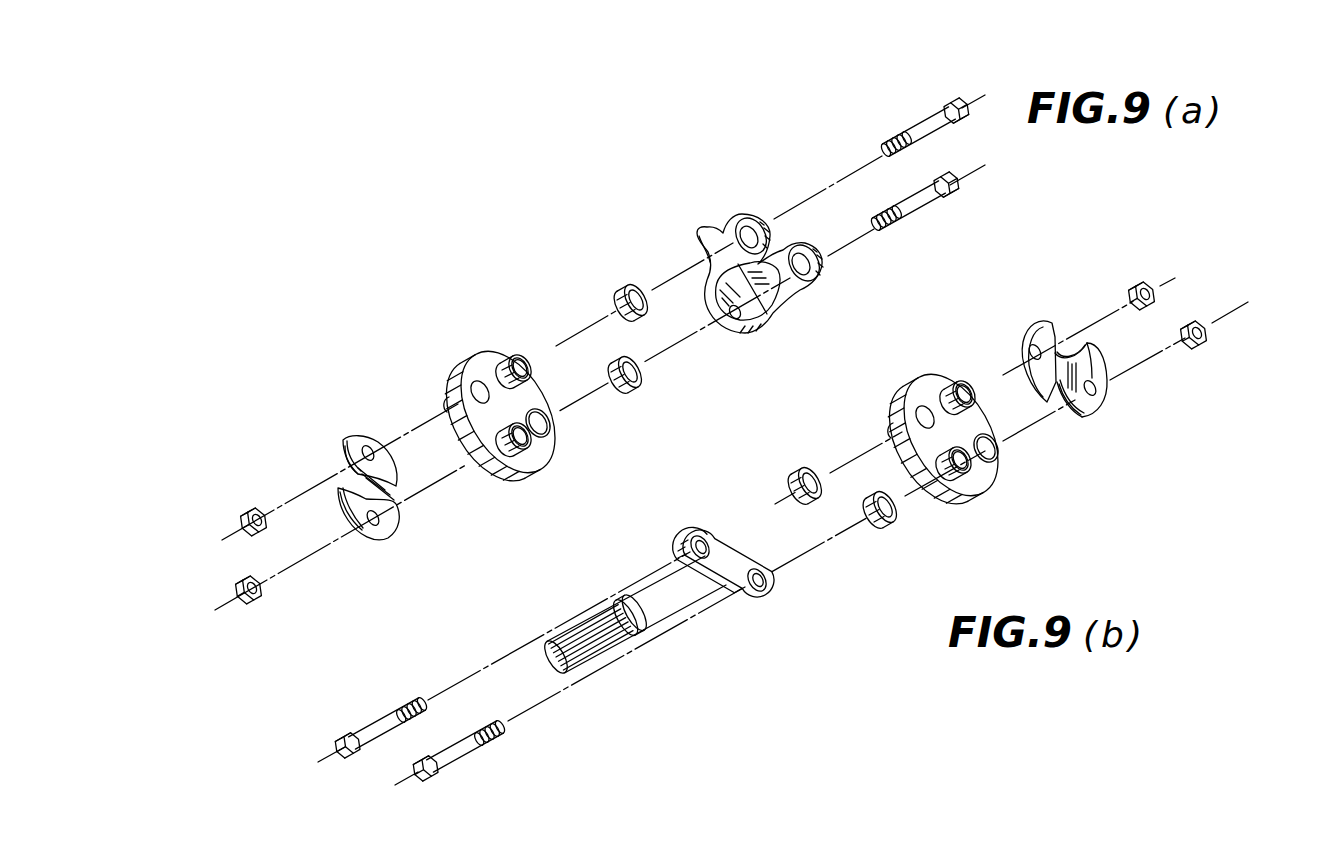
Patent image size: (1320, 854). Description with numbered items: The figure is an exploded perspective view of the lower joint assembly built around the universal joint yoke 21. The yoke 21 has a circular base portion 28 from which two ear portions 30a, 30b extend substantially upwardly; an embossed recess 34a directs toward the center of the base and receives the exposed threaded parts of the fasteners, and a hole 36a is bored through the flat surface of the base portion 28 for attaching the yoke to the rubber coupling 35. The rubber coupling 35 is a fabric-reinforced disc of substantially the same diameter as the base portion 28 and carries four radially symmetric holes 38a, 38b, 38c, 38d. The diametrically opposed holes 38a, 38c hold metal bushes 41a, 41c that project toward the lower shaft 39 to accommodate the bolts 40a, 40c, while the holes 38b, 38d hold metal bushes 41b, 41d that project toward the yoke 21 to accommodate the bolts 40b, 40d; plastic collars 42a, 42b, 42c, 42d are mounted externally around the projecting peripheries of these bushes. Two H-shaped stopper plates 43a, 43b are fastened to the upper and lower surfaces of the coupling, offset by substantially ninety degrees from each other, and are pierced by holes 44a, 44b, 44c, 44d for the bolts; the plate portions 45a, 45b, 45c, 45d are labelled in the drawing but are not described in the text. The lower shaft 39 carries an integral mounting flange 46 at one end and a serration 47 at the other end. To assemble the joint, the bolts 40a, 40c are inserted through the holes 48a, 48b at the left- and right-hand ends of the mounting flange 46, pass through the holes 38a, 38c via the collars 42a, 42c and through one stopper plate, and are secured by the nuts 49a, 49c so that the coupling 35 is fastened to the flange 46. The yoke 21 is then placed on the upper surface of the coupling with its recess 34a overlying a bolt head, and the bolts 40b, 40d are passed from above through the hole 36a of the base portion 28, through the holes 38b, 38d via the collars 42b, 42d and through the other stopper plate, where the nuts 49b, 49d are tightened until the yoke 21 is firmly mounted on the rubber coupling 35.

In FIG. 9A, the yoke 21 is at (772, 327).
In FIG. 9A, the base portion 28 is at (723, 324).
In FIG. 9A, the ear portion 30a is at (730, 232).
In FIG. 9A, the ear portion 30b is at (806, 288).
In FIG. 9A, the recess 34a is at (705, 262).
In FIG. 9A, the hole 36a is at (743, 318).
In FIG. 9A, the rubber coupling 35 is at (460, 376).
In FIG. 9B, the rubber coupling 35 is at (898, 402).
In FIG. 9A, the hole 38a is at (478, 381).
In FIG. 9B, the hole 38a is at (921, 406).
In FIG. 9A, the hole 38b is at (533, 452).
In FIG. 9B, the hole 38b is at (977, 480).
In FIG. 9A, the hole 38c is at (549, 427).
In FIG. 9B, the hole 38c is at (996, 455).
In FIG. 9A, the hole 38d is at (522, 360).
In FIG. 9B, the hole 38d is at (966, 386).
In FIG. 9B, the lower shaft 39 is at (674, 604).
In FIG. 9B, the bolt 40a is at (372, 728).
In FIG. 9A, the bolt 40b is at (928, 204).
In FIG. 9B, the bolt 40c is at (463, 756).
In FIG. 9A, the bolt 40d is at (922, 128).
In FIG. 9A, the metal bush 41a is at (446, 405).
In FIG. 9B, the metal bush 41a is at (888, 430).
In FIG. 9A, the metal bush 41b is at (504, 460).
In FIG. 9B, the metal bush 41b is at (947, 487).
In FIG. 9A, the metal bush 41c is at (549, 438).
In FIG. 9B, the metal bush 41c is at (996, 462).
In FIG. 9A, the metal bush 41d is at (507, 360).
In FIG. 9B, the metal bush 41d is at (955, 384).
In FIG. 9B, the plastic collar 42a is at (798, 470).
In FIG. 9A, the plastic collar 42b is at (628, 390).
In FIG. 9B, the plastic collar 42c is at (880, 523).
In FIG. 9A, the plastic collar 42d is at (627, 287).
In FIG. 9B, the stopper plate 43a is at (1018, 338).
In FIG. 9A, the stopper plate 43b is at (394, 542).
In FIG. 9B, the hole 44a is at (1035, 346).
In FIG. 9A, the hole 44b is at (371, 527).
In FIG. 9B, the hole 44c is at (1096, 392).
In FIG. 9A, the clamp hole 44d is at (368, 447).
In FIG. 9A, the clamp flange 45a is at (350, 470).
In FIG. 9B, the clamp flange 45b is at (1064, 408).
In FIG. 9A, the clamp flange 45c is at (400, 506).
In FIG. 9B, the clamp flange 45d is at (1070, 352).
In FIG. 9B, the mounting flange 46 is at (729, 575).
In FIG. 9B, the serration 47 is at (604, 641).
In FIG. 9B, the hole 48a is at (698, 540).
In FIG. 9B, the hole 48b is at (763, 588).
In FIG. 9B, the nut 49a is at (1136, 283).
In FIG. 9A, the nut 49b is at (259, 600).
In FIG. 9B, the nut 49c is at (1205, 347).
In FIG. 9A, the nut 49d is at (247, 512).